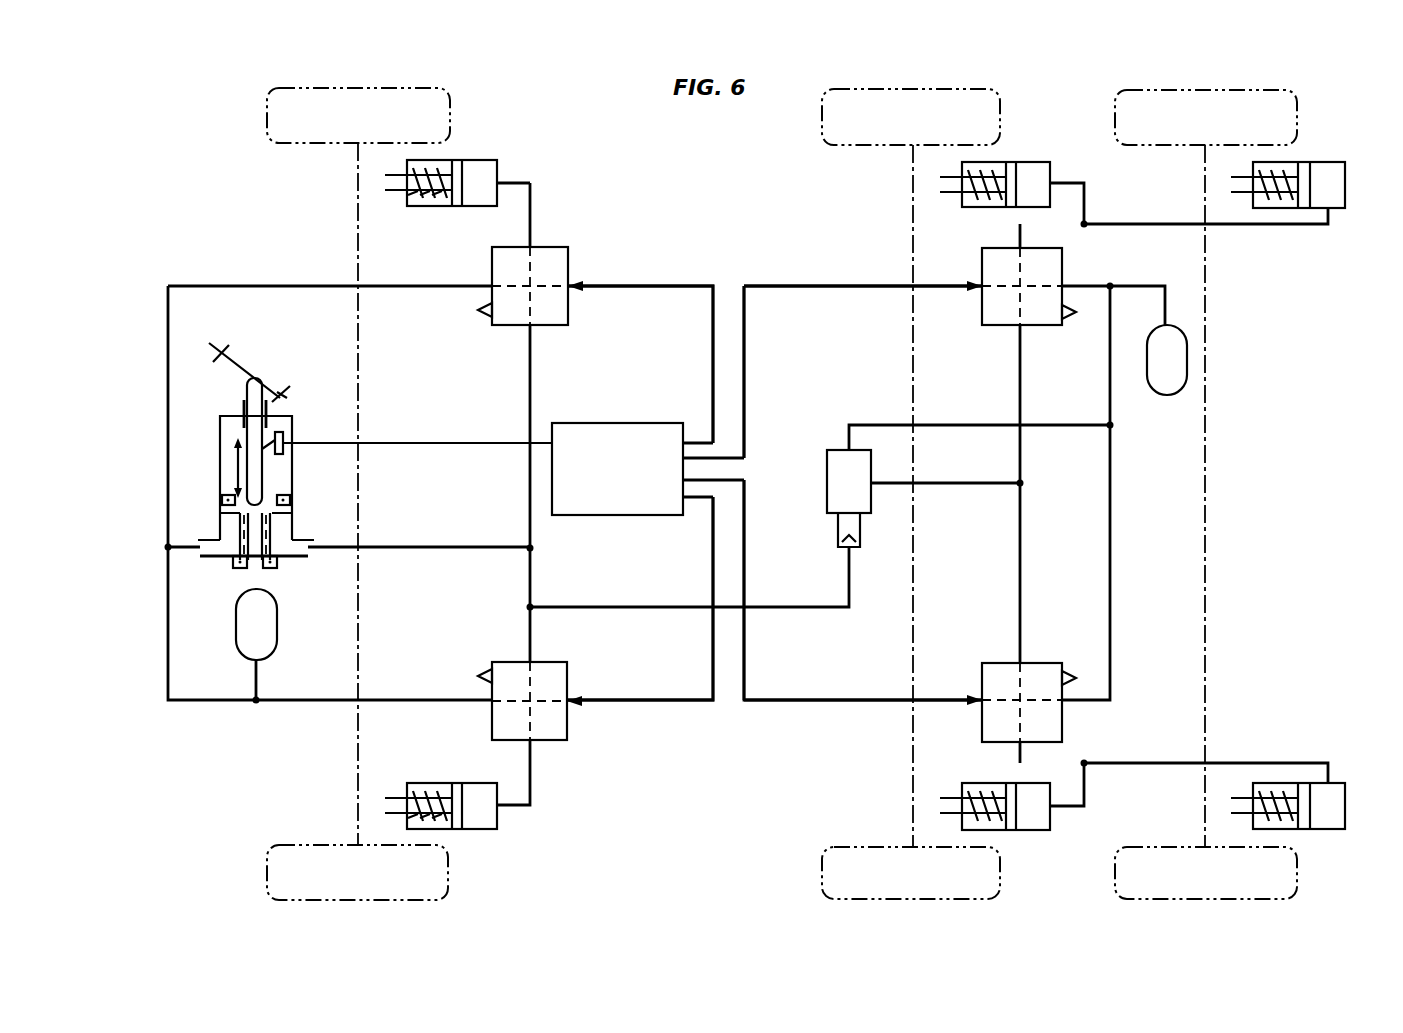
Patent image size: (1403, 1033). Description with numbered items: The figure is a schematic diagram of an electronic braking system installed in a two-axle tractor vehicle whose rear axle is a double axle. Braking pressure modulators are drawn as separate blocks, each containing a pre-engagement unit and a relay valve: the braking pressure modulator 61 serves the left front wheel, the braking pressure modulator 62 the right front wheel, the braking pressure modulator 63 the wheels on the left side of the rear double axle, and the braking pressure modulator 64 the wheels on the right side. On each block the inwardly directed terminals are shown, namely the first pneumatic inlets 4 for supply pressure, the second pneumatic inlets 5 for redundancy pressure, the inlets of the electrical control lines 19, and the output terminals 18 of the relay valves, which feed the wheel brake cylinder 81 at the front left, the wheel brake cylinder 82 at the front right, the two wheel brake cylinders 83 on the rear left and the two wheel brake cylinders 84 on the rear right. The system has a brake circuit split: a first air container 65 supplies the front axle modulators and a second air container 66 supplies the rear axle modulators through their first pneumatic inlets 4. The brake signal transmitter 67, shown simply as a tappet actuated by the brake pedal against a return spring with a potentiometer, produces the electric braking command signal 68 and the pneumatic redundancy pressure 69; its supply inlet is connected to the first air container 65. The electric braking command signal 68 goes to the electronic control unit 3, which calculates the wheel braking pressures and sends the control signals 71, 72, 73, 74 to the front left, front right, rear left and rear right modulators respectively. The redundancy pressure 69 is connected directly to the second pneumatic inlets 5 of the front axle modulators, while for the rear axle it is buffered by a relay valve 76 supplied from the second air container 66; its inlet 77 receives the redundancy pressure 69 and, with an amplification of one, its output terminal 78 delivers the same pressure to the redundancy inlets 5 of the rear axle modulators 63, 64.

The electronic control unit 3 is at (630, 423).
The first pneumatic inlet 4 is at (500, 290).
The second pneumatic inlet 5 is at (527, 315).
The output terminal 18 is at (532, 262).
The electrical control line 19 is at (553, 288).
The braking pressure modulator 61 is at (494, 626).
The braking pressure modulator 62 is at (476, 368).
The braking pressure modulator 63 is at (995, 622).
The braking pressure modulator 64 is at (981, 352).
The first air container 65 is at (268, 630).
The second air container 66 is at (1172, 390).
The brake signal transmitter 67 is at (218, 568).
The electric braking command signal 68 is at (326, 445).
The pneumatic redundancy pressure 69 is at (335, 556).
The control signals 71 is at (630, 700).
The control signals 72 is at (645, 286).
The control signals 73 is at (746, 617).
The control signals 74 is at (746, 320).
The relay valve 76 is at (816, 445).
The inlet 77 is at (845, 560).
The output terminal 78 is at (875, 485).
The wheel brake cylinder 81 is at (460, 828).
The wheel brake cylinder 82 is at (450, 166).
The wheel brake cylinders 83 is at (995, 830).
The wheel brake cylinders 84 is at (990, 166).